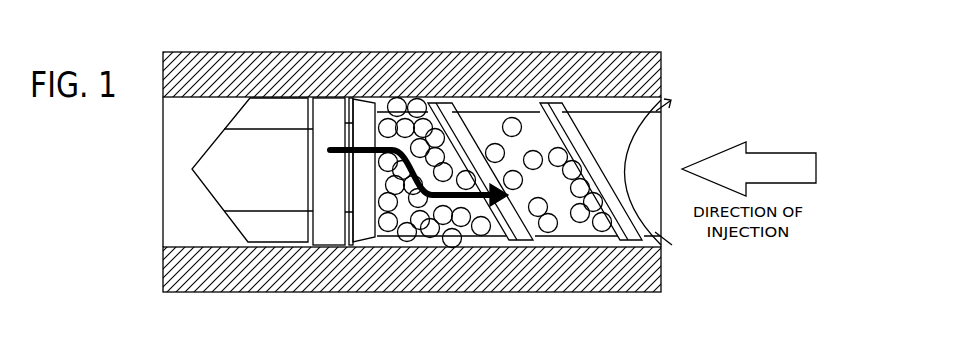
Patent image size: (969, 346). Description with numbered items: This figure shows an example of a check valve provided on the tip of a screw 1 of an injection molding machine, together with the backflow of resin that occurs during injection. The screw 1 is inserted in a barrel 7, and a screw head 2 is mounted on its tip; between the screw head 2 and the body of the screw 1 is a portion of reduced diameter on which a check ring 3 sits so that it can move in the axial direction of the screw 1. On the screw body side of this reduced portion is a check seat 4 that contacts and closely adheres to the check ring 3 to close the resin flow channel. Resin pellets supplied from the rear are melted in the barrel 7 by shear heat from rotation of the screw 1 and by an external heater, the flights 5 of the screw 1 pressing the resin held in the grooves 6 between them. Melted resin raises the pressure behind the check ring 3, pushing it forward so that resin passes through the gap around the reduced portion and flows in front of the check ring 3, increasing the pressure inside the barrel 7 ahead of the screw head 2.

The screw 1 is at (608, 120).
The screw head 2 is at (268, 118).
The check ring 3 is at (322, 237).
The check seat 4 is at (363, 237).
The flights 5 is at (513, 237).
The grooves 6 is at (487, 237).
The barrel 7 is at (310, 72).